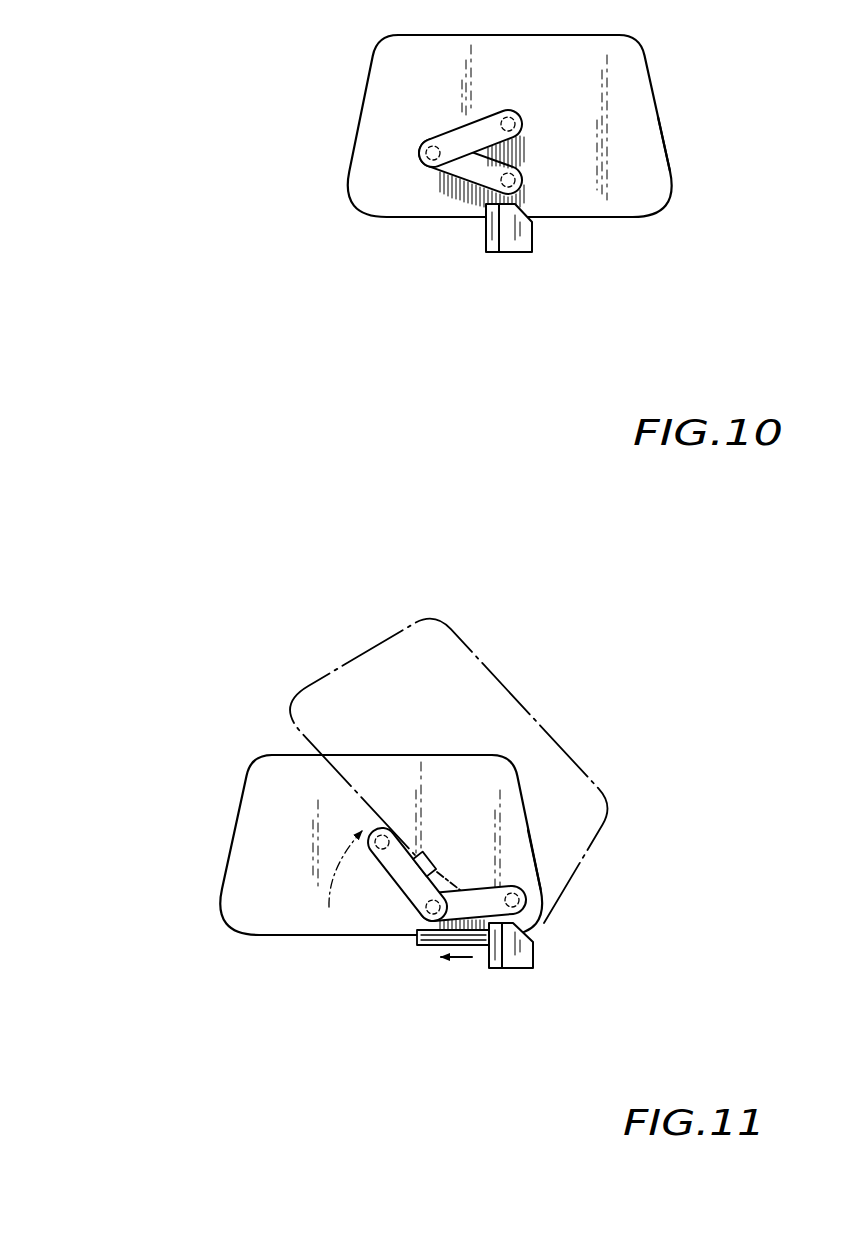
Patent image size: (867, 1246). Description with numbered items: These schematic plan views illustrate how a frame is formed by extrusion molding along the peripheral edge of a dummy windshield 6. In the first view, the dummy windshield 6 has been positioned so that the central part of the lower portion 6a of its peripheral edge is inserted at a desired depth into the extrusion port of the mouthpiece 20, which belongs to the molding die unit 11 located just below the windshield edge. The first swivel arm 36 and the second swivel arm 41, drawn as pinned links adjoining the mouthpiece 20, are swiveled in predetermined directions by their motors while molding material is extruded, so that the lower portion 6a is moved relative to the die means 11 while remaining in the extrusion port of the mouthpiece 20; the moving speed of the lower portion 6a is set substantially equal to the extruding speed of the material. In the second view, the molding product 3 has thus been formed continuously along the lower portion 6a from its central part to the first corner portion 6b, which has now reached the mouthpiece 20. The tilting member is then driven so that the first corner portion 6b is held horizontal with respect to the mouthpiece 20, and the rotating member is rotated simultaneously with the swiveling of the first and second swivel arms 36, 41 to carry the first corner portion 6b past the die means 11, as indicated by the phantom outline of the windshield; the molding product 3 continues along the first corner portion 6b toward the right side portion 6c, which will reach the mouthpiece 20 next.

In FIG. 11, the molding product 3 is at (429, 945).
In FIG. 10, the dummy windshield 6 is at (642, 123).
In FIG. 11, the dummy windshield 6 is at (248, 822).
In FIG. 10, the lower portion 6a is at (607, 218).
In FIG. 11, the lower portion 6a is at (267, 937).
In FIG. 10, the first corner portion 6b is at (675, 188).
In FIG. 11, the first corner portion 6b is at (542, 922).
In FIG. 11, the right side portion 6c is at (593, 843).
In FIG. 10, the molding die unit 11 is at (519, 257).
In FIG. 11, the molding die unit 11 is at (525, 974).
In FIG. 10, the mouthpiece 20 is at (488, 225).
In FIG. 11, the mouthpiece 20 is at (498, 972).
In FIG. 10, the first swivel arm 36 is at (462, 186).
In FIG. 11, the first swivel arm 36 is at (492, 880).
In FIG. 10, the second swivel arm 41 is at (462, 124).
In FIG. 11, the second swivel arm 41 is at (400, 877).